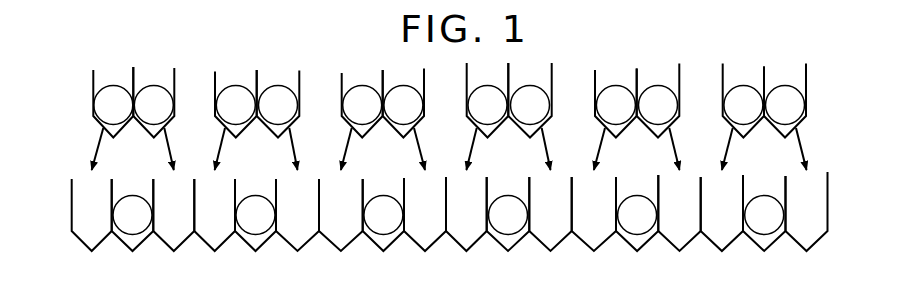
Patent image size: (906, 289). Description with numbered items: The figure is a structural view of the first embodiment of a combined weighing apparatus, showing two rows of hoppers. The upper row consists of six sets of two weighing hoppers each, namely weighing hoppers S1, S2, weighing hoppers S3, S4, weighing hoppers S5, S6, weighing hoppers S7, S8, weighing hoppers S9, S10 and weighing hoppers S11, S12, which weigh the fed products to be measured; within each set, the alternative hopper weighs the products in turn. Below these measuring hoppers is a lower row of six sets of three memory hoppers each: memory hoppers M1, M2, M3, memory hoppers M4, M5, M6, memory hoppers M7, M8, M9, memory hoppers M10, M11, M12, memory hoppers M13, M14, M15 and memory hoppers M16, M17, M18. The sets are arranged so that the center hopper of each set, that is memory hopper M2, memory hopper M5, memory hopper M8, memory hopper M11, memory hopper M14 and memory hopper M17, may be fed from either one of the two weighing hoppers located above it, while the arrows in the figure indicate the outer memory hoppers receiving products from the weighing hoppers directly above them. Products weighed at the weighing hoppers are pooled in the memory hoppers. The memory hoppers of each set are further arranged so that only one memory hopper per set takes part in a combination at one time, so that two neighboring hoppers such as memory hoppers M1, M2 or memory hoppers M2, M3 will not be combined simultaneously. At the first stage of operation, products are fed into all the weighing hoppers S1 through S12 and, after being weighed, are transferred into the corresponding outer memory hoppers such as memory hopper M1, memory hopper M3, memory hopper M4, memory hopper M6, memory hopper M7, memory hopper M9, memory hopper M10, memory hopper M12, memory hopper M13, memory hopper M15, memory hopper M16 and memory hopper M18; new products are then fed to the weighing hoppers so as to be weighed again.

The weighing hopper S1 is at (113, 102).
The weighing hopper S2 is at (153, 102).
The weighing hopper S3 is at (236, 104).
The weighing hopper S4 is at (278, 104).
The weighing hopper S5 is at (362, 104).
The weighing hopper S6 is at (403, 103).
The weighing hopper S7 is at (488, 100).
The weighing hopper S8 is at (529, 100).
The weighing hopper S9 is at (616, 103).
The weighing hopper S10 is at (658, 101).
The weighing hopper S11 is at (743, 101).
The weighing hopper S12 is at (785, 101).
The memory hopper M1 is at (92, 215).
The memory hopper M2 is at (133, 215).
The memory hopper M3 is at (173, 215).
The memory hopper M4 is at (214, 215).
The memory hopper M5 is at (255, 215).
The memory hopper M6 is at (297, 215).
The memory hopper M7 is at (341, 215).
The memory hopper M8 is at (383, 214).
The memory hopper M9 is at (425, 214).
The memory hopper M10 is at (466, 214).
The memory hopper M11 is at (508, 214).
The memory hopper M12 is at (550, 214).
The memory hopper M13 is at (594, 214).
The memory hopper M14 is at (637, 213).
The memory hopper M15 is at (679, 213).
The memory hopper M16 is at (722, 213).
The memory hopper M17 is at (764, 213).
The memory hopper M18 is at (807, 211).